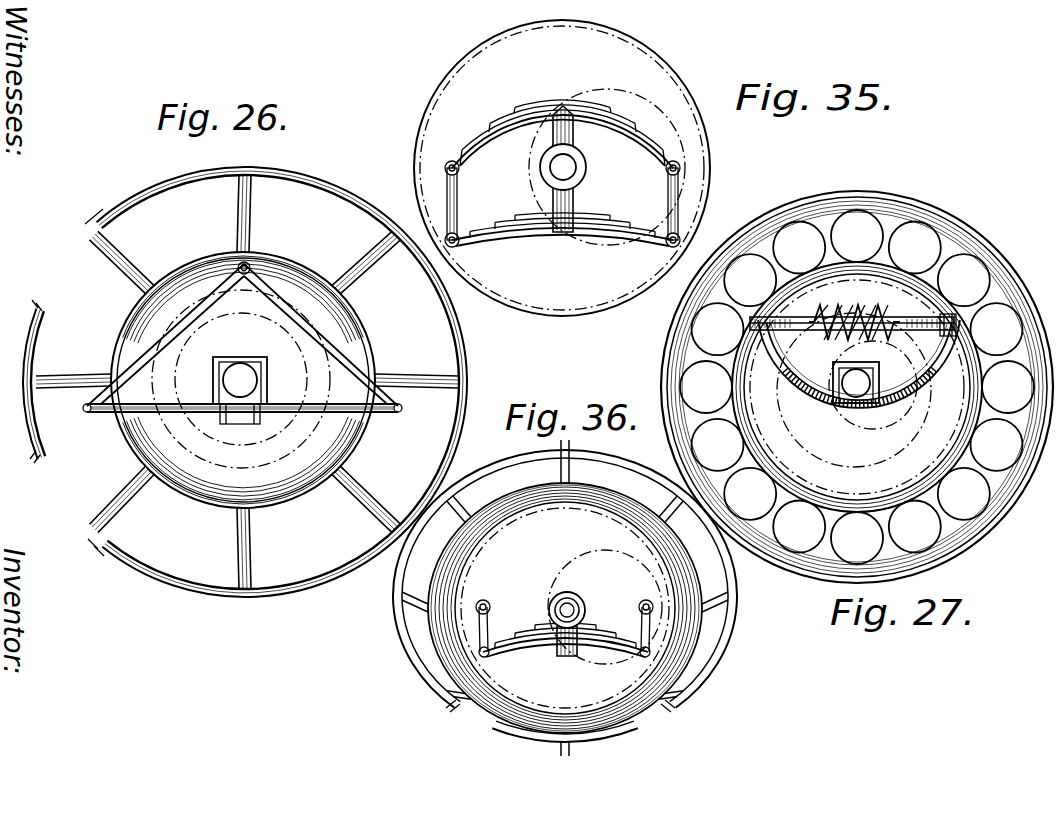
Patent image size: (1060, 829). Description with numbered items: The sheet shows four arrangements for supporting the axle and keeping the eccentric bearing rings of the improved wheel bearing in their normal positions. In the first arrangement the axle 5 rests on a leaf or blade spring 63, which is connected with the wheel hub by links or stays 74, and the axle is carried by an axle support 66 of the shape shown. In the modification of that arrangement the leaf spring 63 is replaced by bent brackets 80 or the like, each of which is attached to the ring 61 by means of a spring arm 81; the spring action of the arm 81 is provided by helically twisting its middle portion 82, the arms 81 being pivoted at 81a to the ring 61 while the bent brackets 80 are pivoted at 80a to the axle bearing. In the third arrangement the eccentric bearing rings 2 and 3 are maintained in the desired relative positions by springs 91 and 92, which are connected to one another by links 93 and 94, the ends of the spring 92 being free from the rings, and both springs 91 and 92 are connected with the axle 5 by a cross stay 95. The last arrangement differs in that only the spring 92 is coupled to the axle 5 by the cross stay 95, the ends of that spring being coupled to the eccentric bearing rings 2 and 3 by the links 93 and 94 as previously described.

In FIG. 26, the eccentric bearing ring 2 is at (257, 340).
In FIG. 35, the eccentric bearing ring 2 is at (635, 123).
In FIG. 36, the eccentric bearing ring 2 is at (580, 568).
In FIG. 26, the eccentric bearing ring 3 is at (205, 315).
In FIG. 35, the eccentric bearing ring 3 is at (467, 90).
In FIG. 36, the eccentric bearing ring 3 is at (492, 553).
In FIG. 26, the axle 5 is at (262, 367).
In FIG. 35, the axle 5 is at (566, 170).
In FIG. 36, the axle 5 is at (565, 607).
In FIG. 26, the ring 61 is at (145, 363).
In FIG. 27, the ring 61 is at (823, 477).
In FIG. 26, the leaf spring 63 is at (162, 414).
In FIG. 26, the axle support 66 is at (222, 406).
In FIG. 26, the links 74 is at (150, 330).
In FIG. 27, the bent bracket 80 is at (806, 402).
In FIG. 27, the pivot 80a is at (873, 403).
In FIG. 27, the spring arm 81 is at (790, 317).
In FIG. 27, the pivot 81a is at (955, 327).
In FIG. 27, the helically twisted middle portion 82 is at (867, 303).
In FIG. 35, the spring 91 is at (543, 115).
In FIG. 35, the spring 92 is at (557, 222).
In FIG. 36, the spring 92 is at (538, 650).
In FIG. 35, the link 93 is at (457, 195).
In FIG. 36, the link 93 is at (487, 608).
In FIG. 35, the link 94 is at (660, 222).
In FIG. 36, the link 94 is at (640, 610).
In FIG. 35, the cross stay 95 is at (567, 103).
In FIG. 36, the cross stay 95 is at (585, 643).